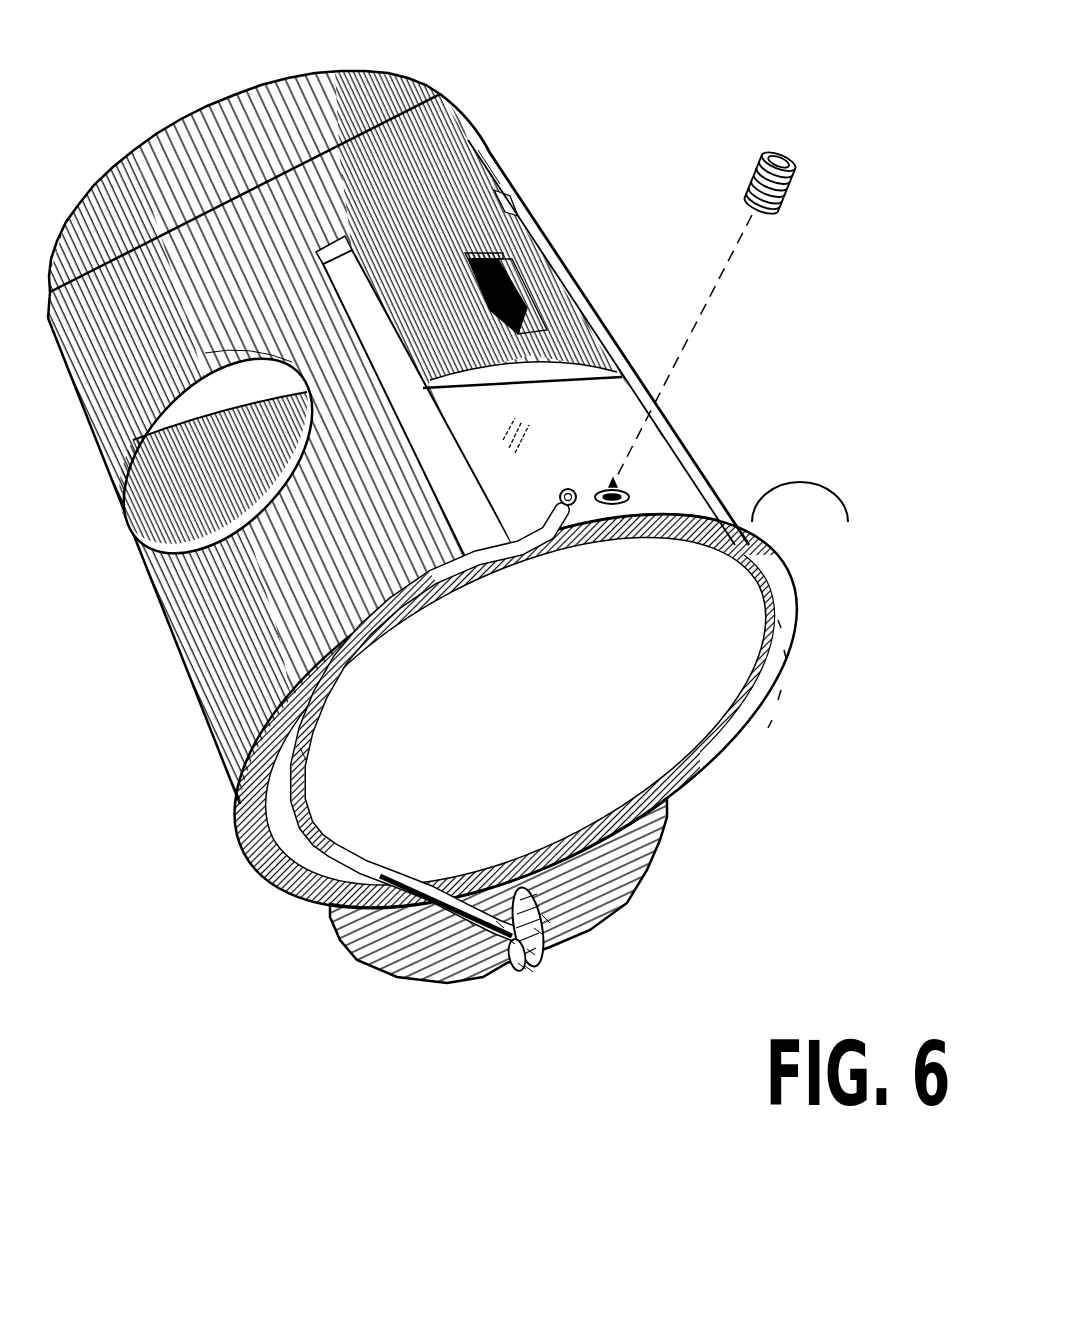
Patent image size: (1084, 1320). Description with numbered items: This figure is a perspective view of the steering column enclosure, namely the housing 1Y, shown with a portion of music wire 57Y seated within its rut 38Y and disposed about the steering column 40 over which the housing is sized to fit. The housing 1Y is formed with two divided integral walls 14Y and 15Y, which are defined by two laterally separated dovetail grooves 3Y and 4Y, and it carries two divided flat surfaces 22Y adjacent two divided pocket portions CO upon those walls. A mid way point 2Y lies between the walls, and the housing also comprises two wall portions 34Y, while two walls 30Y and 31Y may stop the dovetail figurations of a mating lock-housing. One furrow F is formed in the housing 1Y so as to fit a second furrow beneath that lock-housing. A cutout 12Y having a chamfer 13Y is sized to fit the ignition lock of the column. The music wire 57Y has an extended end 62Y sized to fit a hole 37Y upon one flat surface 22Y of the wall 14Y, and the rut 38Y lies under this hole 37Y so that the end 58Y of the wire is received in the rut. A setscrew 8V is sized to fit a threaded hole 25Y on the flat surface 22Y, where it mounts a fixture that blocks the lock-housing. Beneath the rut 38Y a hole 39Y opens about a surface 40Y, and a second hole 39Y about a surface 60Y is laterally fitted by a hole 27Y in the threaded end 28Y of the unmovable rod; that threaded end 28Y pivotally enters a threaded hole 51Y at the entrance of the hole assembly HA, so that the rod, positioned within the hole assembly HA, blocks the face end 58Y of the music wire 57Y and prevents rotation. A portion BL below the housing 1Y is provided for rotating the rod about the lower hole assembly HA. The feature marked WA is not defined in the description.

The housing 1Y is at (192, 682).
The mid way point 2Y is at (436, 175).
The dovetail groove 3Y is at (482, 517).
The dovetail groove 4Y is at (807, 518).
The setscrew 8V is at (752, 178).
The cutout 12Y is at (150, 444).
The chamfer 13Y is at (200, 372).
The integral wall 14Y is at (236, 104).
The integral wall 15Y is at (430, 86).
The flat surface 22Y is at (657, 450).
The threaded hole 25Y is at (617, 488).
The hole 27Y is at (522, 966).
The threaded end 28Y is at (538, 931).
The wall 30Y is at (328, 250).
The wall 31Y is at (522, 218).
The wall portion 34Y is at (492, 367).
The hole 37Y is at (560, 556).
The rut 38Y is at (245, 828).
The hole 39Y is at (470, 922).
The steering column 40 is at (290, 402).
The surface 40Y is at (500, 925).
The threaded hole 51Y is at (529, 969).
The music wire 57Y is at (297, 748).
The end of music wire 58Y is at (531, 952).
The surface 60Y is at (504, 913).
The extended end 62Y is at (572, 487).
The portion below the housing BL is at (635, 880).
The hole assembly HA is at (546, 919).
The wall WA is at (500, 212).
The furrow F is at (508, 290).
The pocket portion CO is at (542, 322).